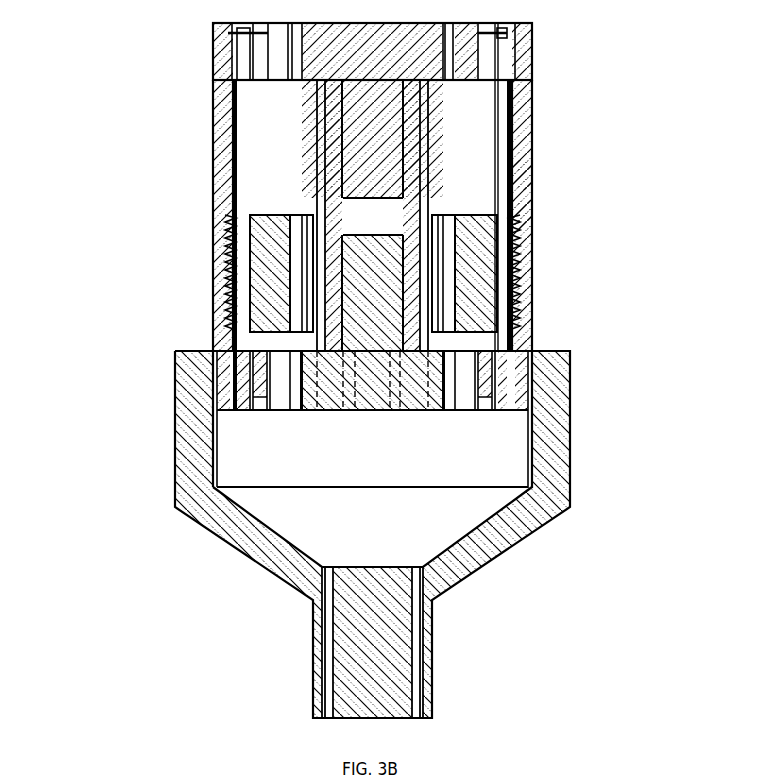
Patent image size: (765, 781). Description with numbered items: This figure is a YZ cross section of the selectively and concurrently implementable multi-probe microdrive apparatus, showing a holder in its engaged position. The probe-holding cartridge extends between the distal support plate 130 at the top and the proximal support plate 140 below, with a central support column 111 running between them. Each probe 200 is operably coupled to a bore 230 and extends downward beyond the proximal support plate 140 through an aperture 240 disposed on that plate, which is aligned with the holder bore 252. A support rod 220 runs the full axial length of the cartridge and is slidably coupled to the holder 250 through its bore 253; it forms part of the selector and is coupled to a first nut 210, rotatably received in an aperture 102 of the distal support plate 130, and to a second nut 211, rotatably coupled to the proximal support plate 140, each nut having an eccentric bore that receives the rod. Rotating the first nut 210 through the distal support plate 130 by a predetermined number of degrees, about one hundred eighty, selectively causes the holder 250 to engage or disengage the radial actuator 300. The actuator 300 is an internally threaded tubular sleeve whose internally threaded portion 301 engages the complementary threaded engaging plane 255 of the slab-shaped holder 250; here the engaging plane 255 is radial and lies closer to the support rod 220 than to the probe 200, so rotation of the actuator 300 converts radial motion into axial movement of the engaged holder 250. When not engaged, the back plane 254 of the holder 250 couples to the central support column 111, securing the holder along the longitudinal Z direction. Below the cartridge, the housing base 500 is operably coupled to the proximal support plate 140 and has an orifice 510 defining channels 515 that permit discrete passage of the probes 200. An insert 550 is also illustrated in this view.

The aperture 102 is at (257, 23).
The distal support plate 130 is at (408, 48).
The bore 230 is at (293, 63).
The first nut 210 is at (255, 65).
The support rod 220 is at (503, 157).
The radial actuator 300 is at (533, 173).
The internally threaded portion 301 is at (533, 215).
The probe 200 is at (312, 165).
The central support column 111 is at (415, 238).
The holder 250 is at (280, 277).
The bore 253 is at (293, 300).
The engaging plane 255 is at (432, 298).
The back plane 254 is at (400, 323).
The bore 252 is at (262, 377).
The proximal support plate 140 is at (448, 377).
The second nut 211 is at (227, 382).
The insert 550 is at (227, 457).
The housing base 500 is at (255, 535).
The aperture 240 is at (540, 400).
The channel 515 is at (330, 630).
The orifice 510 is at (432, 622).